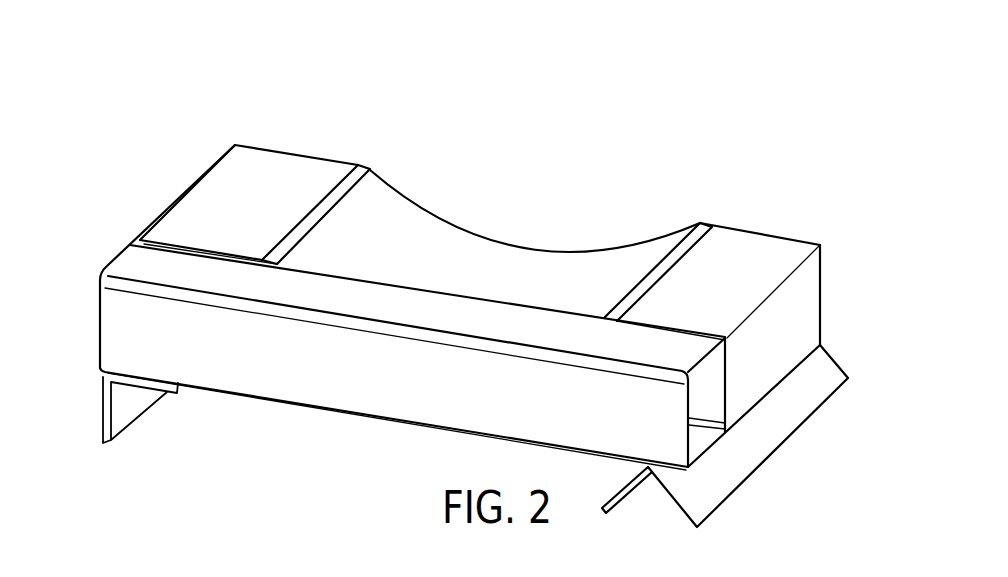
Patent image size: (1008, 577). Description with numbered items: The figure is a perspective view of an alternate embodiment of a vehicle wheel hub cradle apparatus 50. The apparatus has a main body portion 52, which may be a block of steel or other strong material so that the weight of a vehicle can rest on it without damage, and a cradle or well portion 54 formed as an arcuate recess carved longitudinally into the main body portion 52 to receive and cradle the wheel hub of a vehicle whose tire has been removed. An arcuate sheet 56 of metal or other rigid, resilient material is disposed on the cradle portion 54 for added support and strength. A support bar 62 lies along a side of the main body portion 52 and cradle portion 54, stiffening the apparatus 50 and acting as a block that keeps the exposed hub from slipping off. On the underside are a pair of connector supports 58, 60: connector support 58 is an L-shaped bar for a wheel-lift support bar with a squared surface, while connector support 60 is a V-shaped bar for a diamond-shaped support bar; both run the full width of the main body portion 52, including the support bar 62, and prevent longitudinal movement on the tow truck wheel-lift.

The cradle apparatus 50 is at (464, 298).
The main body portion 52 is at (762, 248).
The cradle portion 54 is at (397, 203).
The arcuate sheet 56 is at (348, 173).
The connector support 58 is at (127, 418).
The connector support 60 is at (765, 443).
The support bar 62 is at (220, 186).